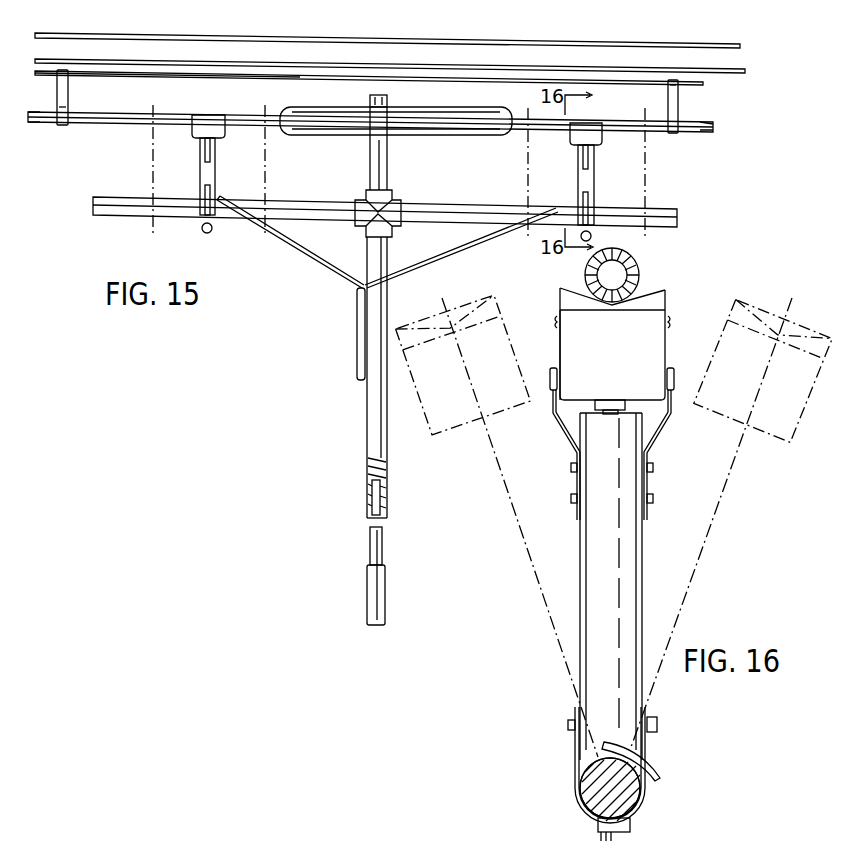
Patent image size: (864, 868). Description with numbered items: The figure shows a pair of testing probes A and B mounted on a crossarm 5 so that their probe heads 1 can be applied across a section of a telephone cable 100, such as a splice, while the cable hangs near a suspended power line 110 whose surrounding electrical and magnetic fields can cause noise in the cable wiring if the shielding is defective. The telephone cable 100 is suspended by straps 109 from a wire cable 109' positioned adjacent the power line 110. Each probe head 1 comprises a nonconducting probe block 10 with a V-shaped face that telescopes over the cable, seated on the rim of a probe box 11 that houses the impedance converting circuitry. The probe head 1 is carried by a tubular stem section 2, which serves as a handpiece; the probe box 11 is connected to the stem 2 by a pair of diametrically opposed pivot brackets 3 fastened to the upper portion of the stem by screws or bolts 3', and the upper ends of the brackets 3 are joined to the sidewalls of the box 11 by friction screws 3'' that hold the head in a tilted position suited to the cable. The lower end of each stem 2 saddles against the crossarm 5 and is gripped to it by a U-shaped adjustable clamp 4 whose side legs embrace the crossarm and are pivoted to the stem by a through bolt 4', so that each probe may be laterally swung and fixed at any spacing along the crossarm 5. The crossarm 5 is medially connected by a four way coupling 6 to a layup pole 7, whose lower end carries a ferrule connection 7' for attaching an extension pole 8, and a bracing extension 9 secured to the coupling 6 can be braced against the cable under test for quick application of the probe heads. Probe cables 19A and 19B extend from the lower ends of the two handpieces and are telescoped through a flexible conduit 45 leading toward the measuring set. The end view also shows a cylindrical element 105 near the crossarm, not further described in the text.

In FIG. 15, the power line 110 is at (316, 63).
In FIG. 15, the straps 109 is at (379, 101).
In FIG. 15, the wire cable 109' is at (167, 87).
In FIG. 15, the telephone cable 100 is at (48, 118).
In FIG. 16, the telephone cable 100 is at (634, 265).
In FIG. 15, the cylinder 105 is at (494, 110).
In FIG. 15, the bracing extension 9 is at (388, 160).
In FIG. 15, the four way coupling 6 is at (392, 201).
In FIG. 15, the crossarm 5 is at (470, 206).
In FIG. 15, the probe head 1 is at (225, 133).
In FIG. 16, the probe head 1 is at (668, 342).
In FIG. 15, the stem section 2 is at (215, 171).
In FIG. 16, the stem section 2 is at (643, 561).
In FIG. 15, the probe A is at (188, 134).
In FIG. 15, the probe B is at (603, 141).
In FIG. 15, the probe cable 19A is at (283, 244).
In FIG. 16, the probe cable 19A is at (628, 786).
In FIG. 15, the probe cable 19B is at (478, 246).
In FIG. 16, the probe cable 19B is at (610, 788).
In FIG. 15, the flexible conduit 45 is at (357, 312).
In FIG. 15, the layup pole 7 is at (389, 377).
In FIG. 15, the ferrule connection 7' is at (392, 486).
In FIG. 15, the extension pole 8 is at (385, 581).
In FIG. 16, the probe block 10 is at (666, 291).
In FIG. 16, the probe box 11 is at (562, 338).
In FIG. 16, the pivot brackets 3 is at (604, 455).
In FIG. 16, the screws or bolts 3' is at (624, 483).
In FIG. 16, the friction screws 3'' is at (616, 367).
In FIG. 16, the adjustable clamp 4 is at (613, 779).
In FIG. 16, the through bolt 4' is at (621, 712).